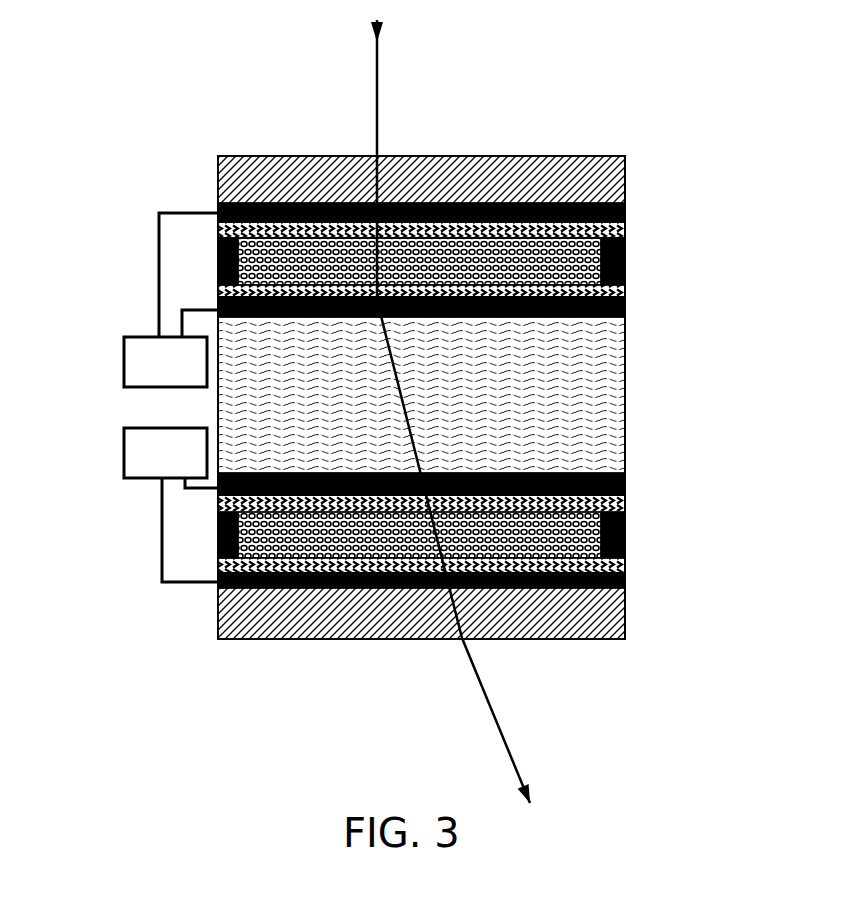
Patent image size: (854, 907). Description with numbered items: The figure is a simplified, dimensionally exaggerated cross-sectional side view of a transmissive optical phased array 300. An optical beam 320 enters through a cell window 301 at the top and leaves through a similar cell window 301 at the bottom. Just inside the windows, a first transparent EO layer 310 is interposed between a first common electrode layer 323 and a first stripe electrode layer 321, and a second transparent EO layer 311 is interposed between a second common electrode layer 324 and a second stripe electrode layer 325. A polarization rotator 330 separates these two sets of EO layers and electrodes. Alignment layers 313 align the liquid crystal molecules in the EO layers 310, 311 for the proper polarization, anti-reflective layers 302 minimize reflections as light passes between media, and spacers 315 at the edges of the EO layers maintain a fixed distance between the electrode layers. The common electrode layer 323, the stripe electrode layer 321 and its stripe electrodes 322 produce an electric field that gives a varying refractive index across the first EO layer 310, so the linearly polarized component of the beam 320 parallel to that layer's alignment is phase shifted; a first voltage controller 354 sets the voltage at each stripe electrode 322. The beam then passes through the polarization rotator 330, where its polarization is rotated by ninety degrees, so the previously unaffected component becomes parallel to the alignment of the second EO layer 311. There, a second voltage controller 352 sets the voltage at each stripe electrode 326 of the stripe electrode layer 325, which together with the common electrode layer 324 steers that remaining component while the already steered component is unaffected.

The transmissive optical phased array 300 is at (197, 127).
The cell window 301 is at (218, 176).
The anti-reflective layer 302 is at (627, 227).
The first transparent EO layer 310 is at (627, 252).
The second transparent EO layer 311 is at (627, 540).
The alignment layer 313 is at (218, 232).
The spacer 315 is at (218, 264).
The optical beam 320 is at (373, 117).
The first stripe electrode layer 321 is at (182, 317).
The stripe electrode 322 is at (218, 302).
The first common electrode layer 323 is at (627, 212).
The second common electrode layer 324 is at (218, 583).
The second stripe electrode layer 325 is at (627, 485).
The stripe electrode 326 is at (215, 492).
The polarization rotator 330 is at (218, 422).
The second voltage controller 352 is at (124, 443).
The first voltage controller 354 is at (124, 363).